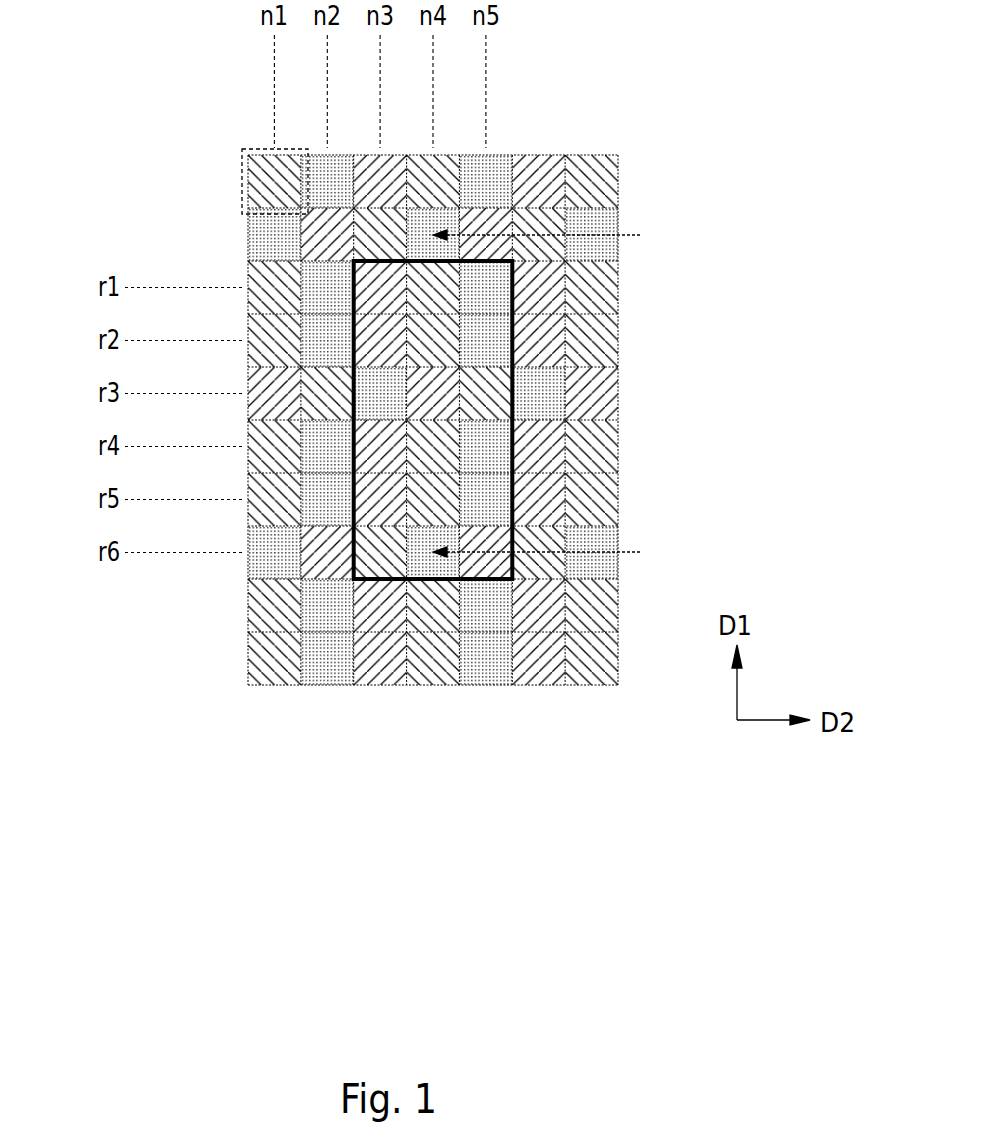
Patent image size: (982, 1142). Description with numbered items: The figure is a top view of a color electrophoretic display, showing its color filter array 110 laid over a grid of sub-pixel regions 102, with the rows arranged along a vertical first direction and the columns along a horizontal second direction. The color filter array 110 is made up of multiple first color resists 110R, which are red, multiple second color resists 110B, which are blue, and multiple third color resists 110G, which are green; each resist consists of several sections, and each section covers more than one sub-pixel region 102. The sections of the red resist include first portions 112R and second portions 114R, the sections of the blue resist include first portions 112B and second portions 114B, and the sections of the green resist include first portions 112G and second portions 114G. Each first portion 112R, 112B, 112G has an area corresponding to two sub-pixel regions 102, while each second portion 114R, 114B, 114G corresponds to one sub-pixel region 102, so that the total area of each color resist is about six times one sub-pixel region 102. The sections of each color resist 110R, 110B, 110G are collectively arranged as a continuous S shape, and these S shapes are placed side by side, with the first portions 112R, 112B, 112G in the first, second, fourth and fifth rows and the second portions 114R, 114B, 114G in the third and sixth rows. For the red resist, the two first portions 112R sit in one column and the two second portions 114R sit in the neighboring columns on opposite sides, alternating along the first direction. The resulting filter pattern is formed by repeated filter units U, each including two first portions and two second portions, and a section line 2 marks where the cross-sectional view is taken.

The color filter array 110 is at (802, 75).
The sub-pixel region 102 is at (240, 172).
The first portion of first color resist 112R is at (450, 338).
The first portion of third color resist 112G is at (495, 353).
The first portion of second color resist 112B is at (372, 300).
The second portion of first color resist 114R is at (538, 220).
The second portion of third color resist 114G is at (590, 220).
The second portion of second color resist 114B is at (450, 393).
The line 2- 2 is at (549, 395).
The filter unit U is at (373, 580).
The first color resist 110R is at (157, 747).
The second color resist 110B is at (157, 822).
The third color resist 110G is at (157, 897).